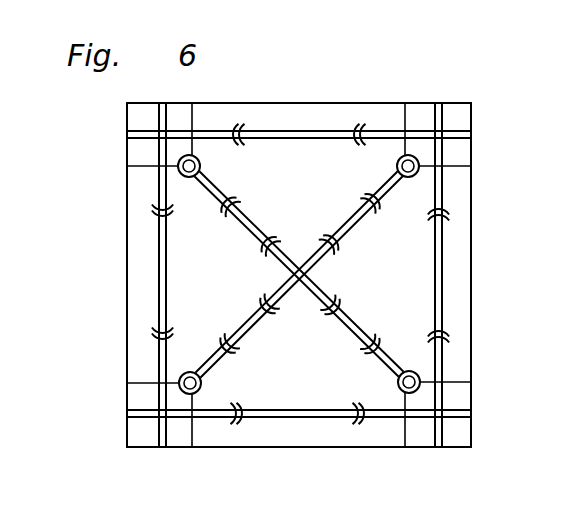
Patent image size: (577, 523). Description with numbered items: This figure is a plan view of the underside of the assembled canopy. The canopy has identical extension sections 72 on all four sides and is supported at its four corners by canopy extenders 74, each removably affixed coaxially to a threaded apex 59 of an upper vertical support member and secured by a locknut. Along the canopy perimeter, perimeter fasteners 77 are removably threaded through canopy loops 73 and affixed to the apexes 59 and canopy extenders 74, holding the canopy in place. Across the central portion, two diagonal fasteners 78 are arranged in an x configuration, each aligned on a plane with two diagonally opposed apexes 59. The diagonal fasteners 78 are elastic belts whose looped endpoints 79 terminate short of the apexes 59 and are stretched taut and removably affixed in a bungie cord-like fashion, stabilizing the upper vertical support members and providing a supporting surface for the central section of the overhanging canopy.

The threaded apex of upper vertical support member 59 is at (420, 390).
The extension section 72 is at (458, 243).
The canopy loop 73 is at (236, 128).
The canopy extender 74 is at (455, 113).
The perimeter fastener 77 is at (301, 131).
The diagonal fastener 78 is at (243, 323).
The looped endpoint 79 is at (419, 160).